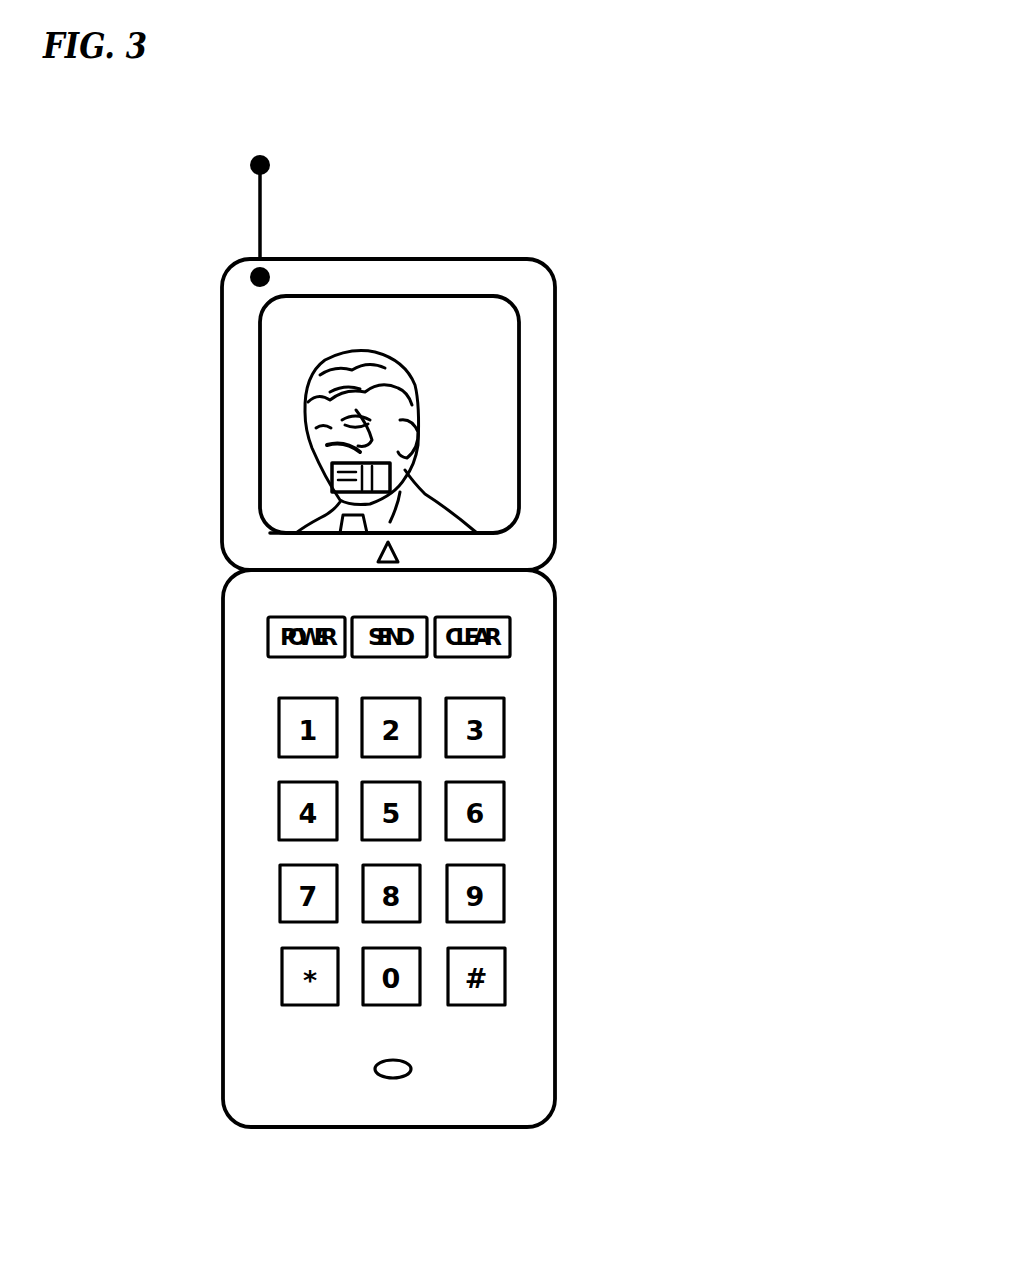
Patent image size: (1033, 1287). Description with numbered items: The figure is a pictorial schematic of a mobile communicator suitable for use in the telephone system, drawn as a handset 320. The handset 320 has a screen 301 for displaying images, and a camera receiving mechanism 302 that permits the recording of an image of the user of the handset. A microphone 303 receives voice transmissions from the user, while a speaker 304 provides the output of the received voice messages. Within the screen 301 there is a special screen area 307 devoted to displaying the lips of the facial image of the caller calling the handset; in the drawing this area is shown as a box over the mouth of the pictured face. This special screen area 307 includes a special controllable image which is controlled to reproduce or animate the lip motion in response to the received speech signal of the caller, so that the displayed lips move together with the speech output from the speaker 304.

The screen 301 is at (369, 414).
The camera receiving mechanism 302 is at (252, 274).
The microphone 303 is at (412, 1068).
The speaker 304 is at (400, 552).
The special screen area 307 is at (327, 477).
The handset 320 is at (556, 305).